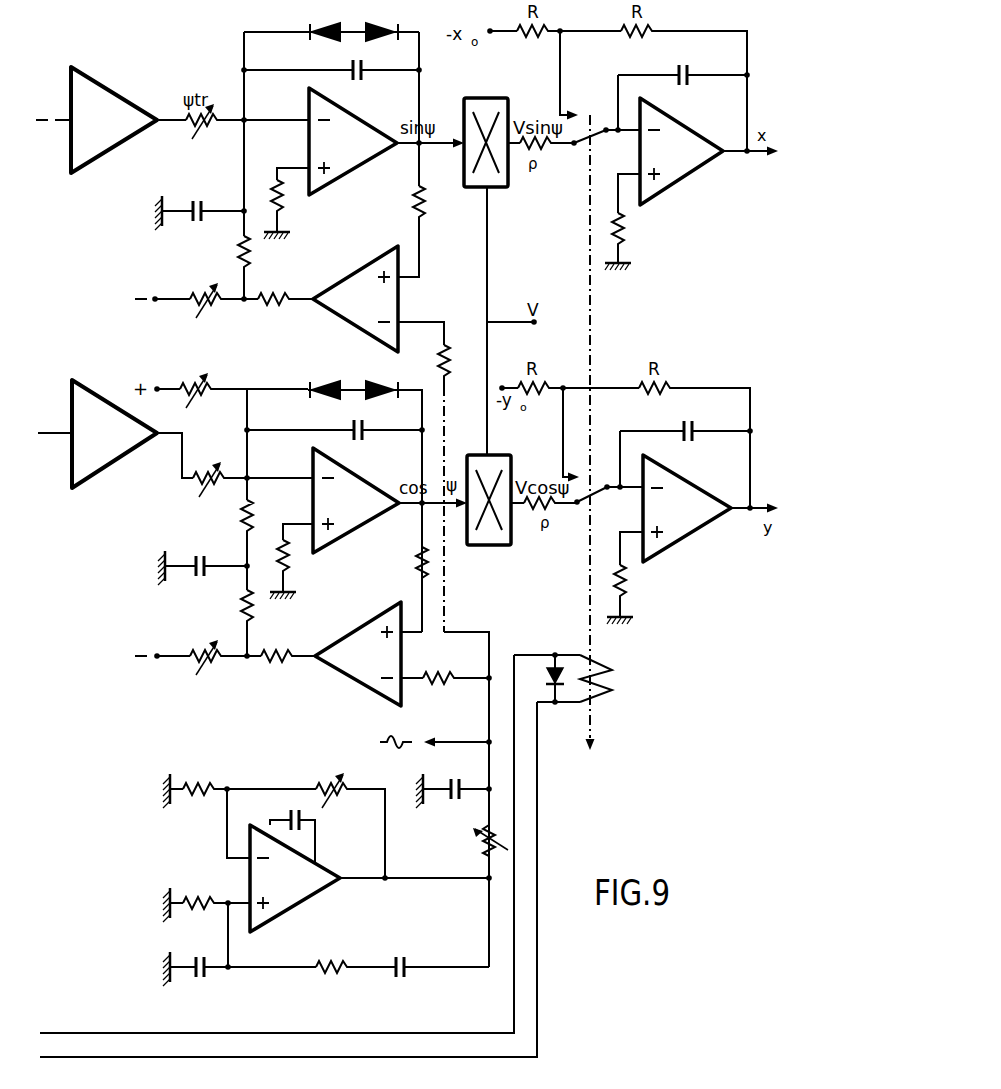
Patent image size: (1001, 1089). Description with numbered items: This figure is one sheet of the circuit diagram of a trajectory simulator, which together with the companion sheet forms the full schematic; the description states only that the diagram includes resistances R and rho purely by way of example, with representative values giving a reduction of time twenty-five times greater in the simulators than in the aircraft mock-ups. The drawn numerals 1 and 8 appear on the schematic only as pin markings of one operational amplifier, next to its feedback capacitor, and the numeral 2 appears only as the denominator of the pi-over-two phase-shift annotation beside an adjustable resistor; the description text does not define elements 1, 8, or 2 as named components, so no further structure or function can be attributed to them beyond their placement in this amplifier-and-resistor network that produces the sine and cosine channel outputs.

The operational amplifier pin 1 is at (285, 836).
The operational amplifier pin 8 is at (295, 878).
The phase-shift (π/2) adjustable resistor 2 is at (242, 452).